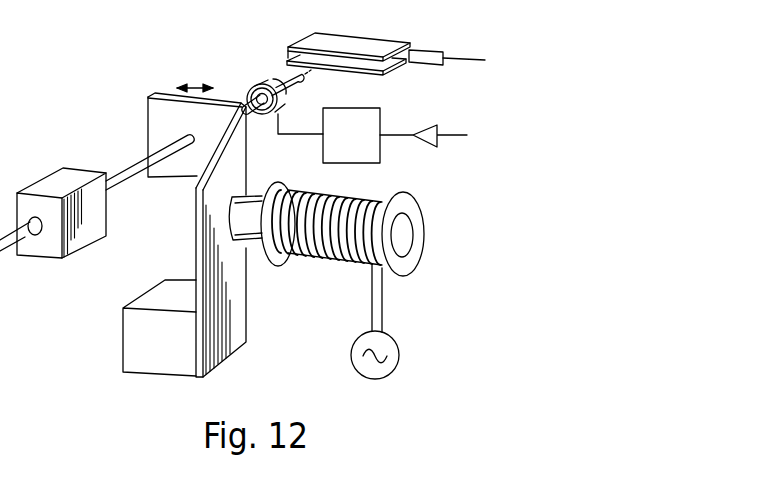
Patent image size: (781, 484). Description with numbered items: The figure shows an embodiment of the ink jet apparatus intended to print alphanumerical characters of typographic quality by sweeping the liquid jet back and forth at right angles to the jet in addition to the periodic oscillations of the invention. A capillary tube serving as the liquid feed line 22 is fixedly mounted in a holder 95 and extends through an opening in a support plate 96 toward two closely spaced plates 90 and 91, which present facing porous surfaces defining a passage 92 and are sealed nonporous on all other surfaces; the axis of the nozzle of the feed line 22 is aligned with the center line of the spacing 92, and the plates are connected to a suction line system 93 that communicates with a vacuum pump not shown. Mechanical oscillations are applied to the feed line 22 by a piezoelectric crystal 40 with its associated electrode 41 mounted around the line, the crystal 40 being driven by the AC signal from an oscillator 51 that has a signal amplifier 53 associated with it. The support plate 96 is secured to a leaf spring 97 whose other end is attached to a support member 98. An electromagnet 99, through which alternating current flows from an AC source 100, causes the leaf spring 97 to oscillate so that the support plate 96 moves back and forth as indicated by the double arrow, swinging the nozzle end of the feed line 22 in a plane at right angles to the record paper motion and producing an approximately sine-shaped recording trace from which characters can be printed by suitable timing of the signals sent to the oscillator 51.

The feed line 22 is at (247, 102).
The piezoelectric crystal 40 is at (260, 88).
The electrode 41 is at (277, 78).
The oscillator 51 is at (372, 122).
The signal amplifier 53 is at (426, 147).
The plate 90 is at (365, 43).
The plate 91 is at (362, 76).
The passage 92 is at (288, 55).
The suction line system 93 is at (428, 50).
The holder 95 is at (82, 175).
The support plate 96 is at (155, 113).
The leaf spring 97 is at (240, 166).
The support member 98 is at (133, 350).
The electromagnet 99 is at (332, 253).
The AC source 100 is at (399, 352).